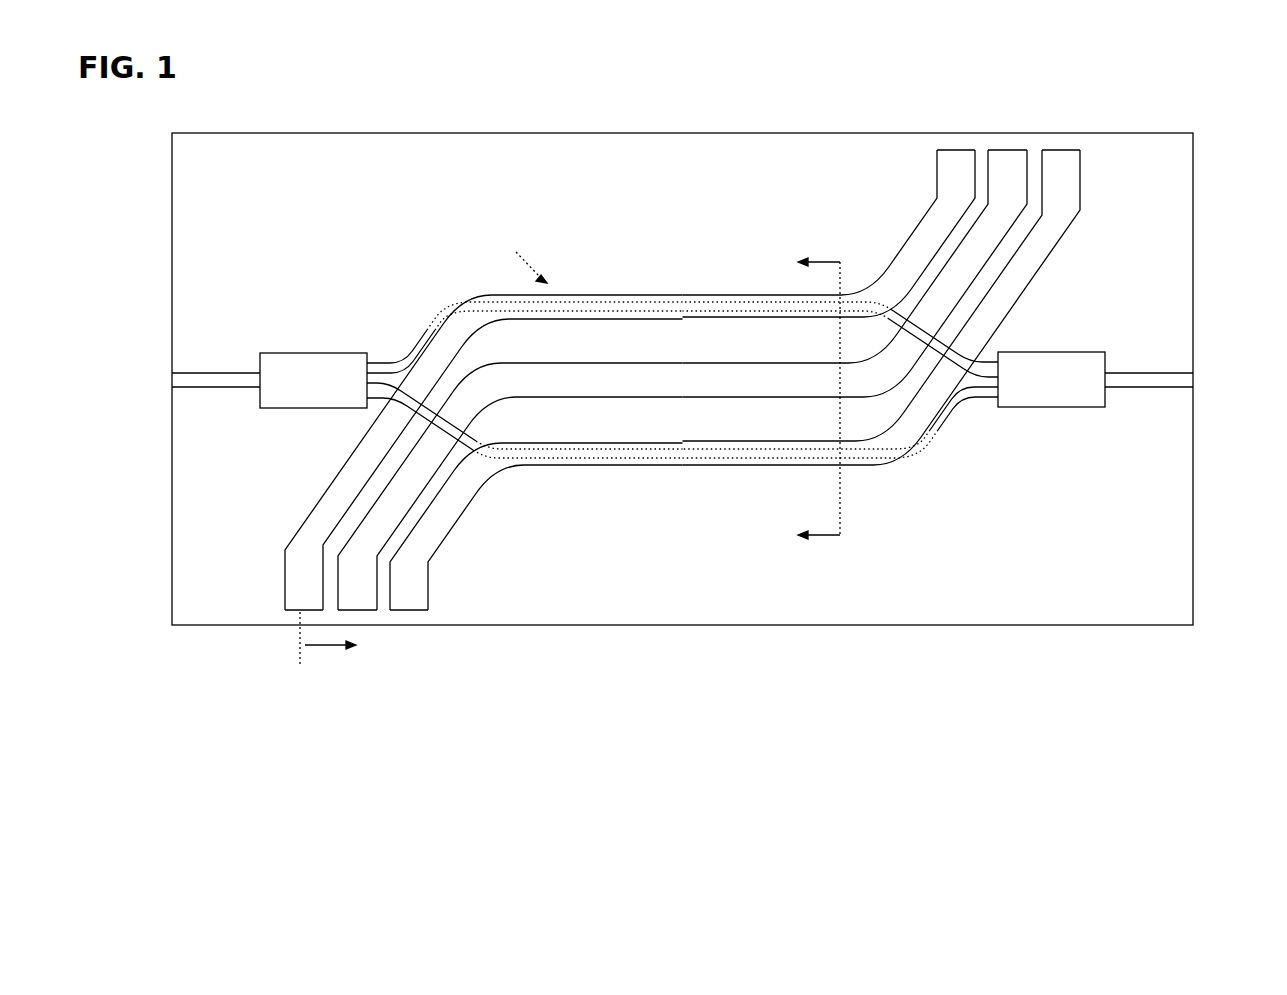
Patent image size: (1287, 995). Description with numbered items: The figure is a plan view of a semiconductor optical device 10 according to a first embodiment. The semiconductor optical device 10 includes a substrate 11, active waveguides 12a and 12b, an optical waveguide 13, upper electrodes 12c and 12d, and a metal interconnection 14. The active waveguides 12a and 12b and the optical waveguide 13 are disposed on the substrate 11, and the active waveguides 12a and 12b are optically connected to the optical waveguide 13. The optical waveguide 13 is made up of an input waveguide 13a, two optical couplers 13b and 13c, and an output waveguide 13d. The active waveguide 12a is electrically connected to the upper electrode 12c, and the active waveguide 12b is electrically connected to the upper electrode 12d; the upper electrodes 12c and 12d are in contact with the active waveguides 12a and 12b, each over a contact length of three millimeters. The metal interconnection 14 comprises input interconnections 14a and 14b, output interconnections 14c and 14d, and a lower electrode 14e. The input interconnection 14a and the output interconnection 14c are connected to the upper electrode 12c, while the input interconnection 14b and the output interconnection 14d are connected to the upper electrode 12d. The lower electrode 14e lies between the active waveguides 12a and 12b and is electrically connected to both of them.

The semiconductor optical device 10 is at (1138, 670).
The substrate 11 is at (1180, 572).
The active waveguide 12a is at (596, 293).
The active waveguide 12b is at (562, 468).
The upper electrode 12c is at (684, 300).
The upper electrode 12d is at (634, 470).
The optical waveguide 13 is at (252, 236).
The input waveguide 13a is at (238, 372).
The optical coupler 13b is at (310, 353).
The optical coupler 13c is at (1055, 408).
The output waveguide 13d is at (1135, 388).
The metal interconnection 14 is at (1140, 170).
The input interconnection 14a is at (315, 570).
The input interconnection 14b is at (450, 524).
The output interconnection 14c is at (955, 168).
The output interconnection 14d is at (1007, 292).
The lower electrode 14e is at (390, 524).